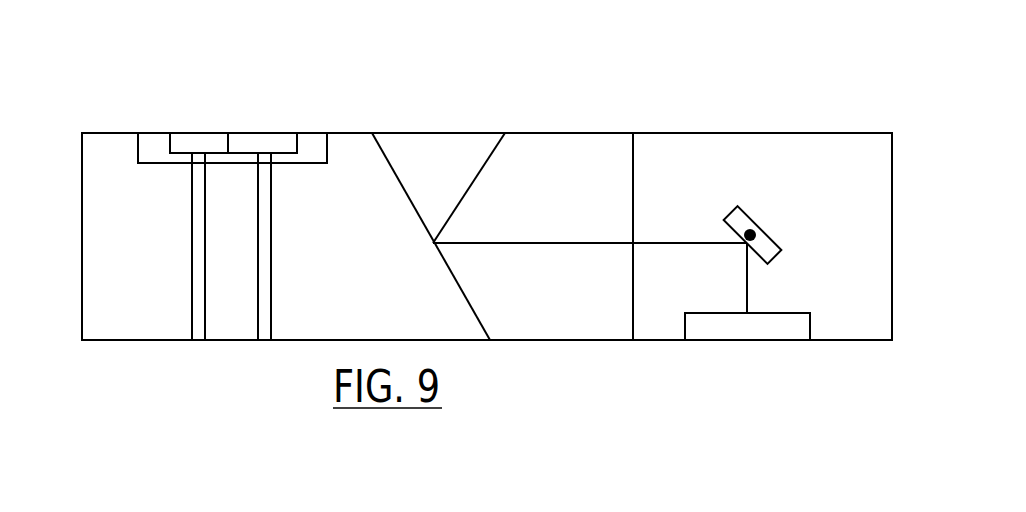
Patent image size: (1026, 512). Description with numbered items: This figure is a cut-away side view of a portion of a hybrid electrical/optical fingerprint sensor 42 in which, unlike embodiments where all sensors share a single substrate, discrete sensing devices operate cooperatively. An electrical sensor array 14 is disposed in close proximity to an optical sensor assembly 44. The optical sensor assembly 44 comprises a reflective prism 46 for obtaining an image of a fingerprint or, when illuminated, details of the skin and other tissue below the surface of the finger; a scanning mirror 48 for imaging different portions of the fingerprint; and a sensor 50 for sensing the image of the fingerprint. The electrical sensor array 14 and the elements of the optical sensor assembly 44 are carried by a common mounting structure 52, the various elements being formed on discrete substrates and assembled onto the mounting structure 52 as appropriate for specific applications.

The hybrid electrical/optical fingerprint sensor 42 is at (140, 76).
The electrical sensor array 14 is at (192, 132).
The optical sensor assembly 44 is at (888, 120).
The reflective prism 46 is at (542, 325).
The scanning mirror 48 is at (770, 228).
The sensor 50 is at (735, 325).
The mounting structure 52 is at (80, 253).